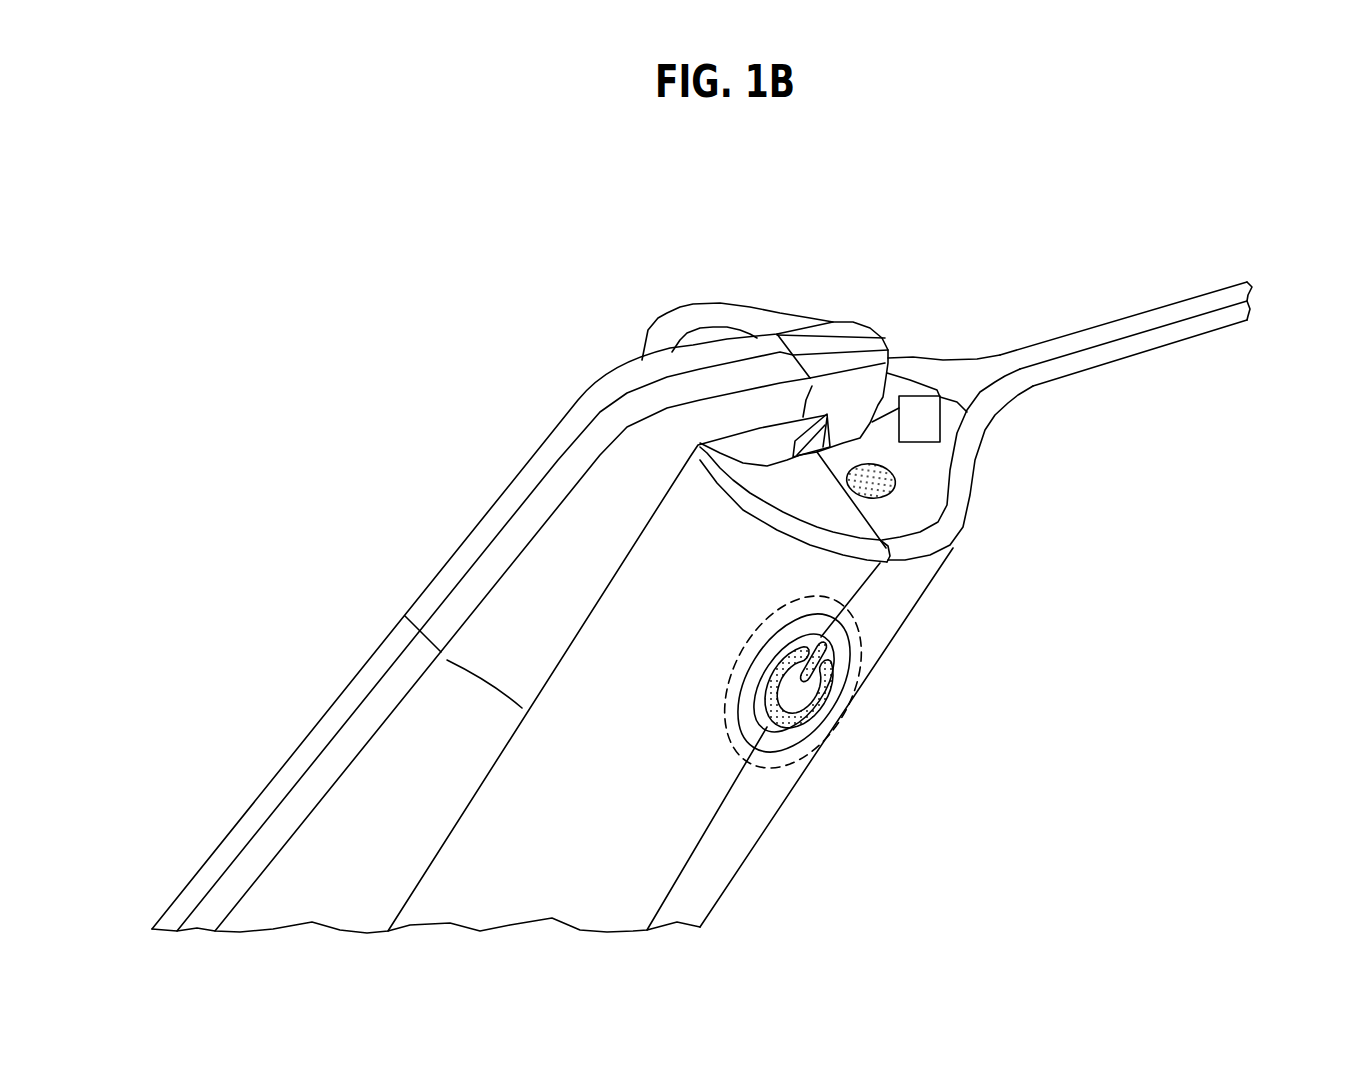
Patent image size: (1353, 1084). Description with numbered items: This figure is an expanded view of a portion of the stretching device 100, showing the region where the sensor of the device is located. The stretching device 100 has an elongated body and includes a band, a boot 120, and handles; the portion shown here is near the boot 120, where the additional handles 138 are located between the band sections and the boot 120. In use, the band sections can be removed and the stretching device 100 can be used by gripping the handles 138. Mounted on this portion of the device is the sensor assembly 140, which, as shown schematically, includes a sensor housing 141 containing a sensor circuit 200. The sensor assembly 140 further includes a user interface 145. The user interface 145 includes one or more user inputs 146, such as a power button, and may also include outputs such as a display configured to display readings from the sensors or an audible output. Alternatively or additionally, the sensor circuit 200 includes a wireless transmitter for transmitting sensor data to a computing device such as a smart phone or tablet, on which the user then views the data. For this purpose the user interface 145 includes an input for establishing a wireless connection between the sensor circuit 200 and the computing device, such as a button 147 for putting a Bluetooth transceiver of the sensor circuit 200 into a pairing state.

The stretching device 100 is at (506, 282).
The boot 120 is at (1118, 333).
The additional handles 138 is at (438, 612).
The sensor assembly 140 is at (1056, 517).
The sensor housing 141 is at (937, 482).
The user interface 145 is at (817, 817).
The user inputs 146 is at (833, 686).
The button 147 is at (882, 490).
The sensor circuit 200 is at (919, 396).